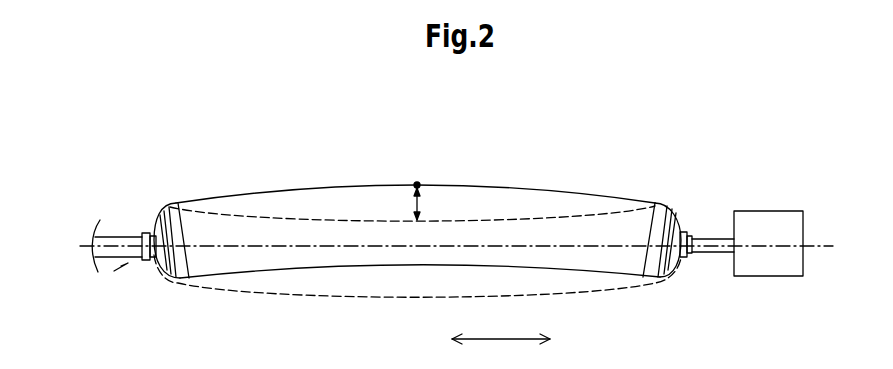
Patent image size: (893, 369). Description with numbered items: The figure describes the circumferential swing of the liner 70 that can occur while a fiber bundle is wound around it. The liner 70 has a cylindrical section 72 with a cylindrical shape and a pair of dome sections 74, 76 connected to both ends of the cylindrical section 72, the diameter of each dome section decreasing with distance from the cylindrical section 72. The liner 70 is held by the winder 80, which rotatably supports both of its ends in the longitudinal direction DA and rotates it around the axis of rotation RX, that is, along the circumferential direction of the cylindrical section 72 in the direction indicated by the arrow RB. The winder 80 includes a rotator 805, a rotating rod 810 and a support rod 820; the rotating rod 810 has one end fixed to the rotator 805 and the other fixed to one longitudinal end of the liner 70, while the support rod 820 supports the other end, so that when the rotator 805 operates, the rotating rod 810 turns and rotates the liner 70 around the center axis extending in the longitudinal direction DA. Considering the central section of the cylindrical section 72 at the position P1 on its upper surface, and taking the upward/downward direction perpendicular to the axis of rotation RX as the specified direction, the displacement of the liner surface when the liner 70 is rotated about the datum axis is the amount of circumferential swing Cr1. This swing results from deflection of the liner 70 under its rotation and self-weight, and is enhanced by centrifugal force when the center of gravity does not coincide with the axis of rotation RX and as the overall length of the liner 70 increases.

The liner 70 is at (423, 204).
The cylindrical section 72 is at (508, 187).
The dome section 74 is at (658, 200).
The dome section 76 is at (158, 217).
The winder 80 is at (744, 241).
The rotator 805 is at (767, 277).
The rotating rod 810 is at (710, 253).
The support rod 820 is at (128, 258).
The position P1 is at (416, 182).
The amount of circumferential swing Cr1 is at (435, 204).
The circumferential direction RB is at (129, 236).
The axis of rotation RX is at (825, 248).
The longitudinal direction DA is at (501, 330).